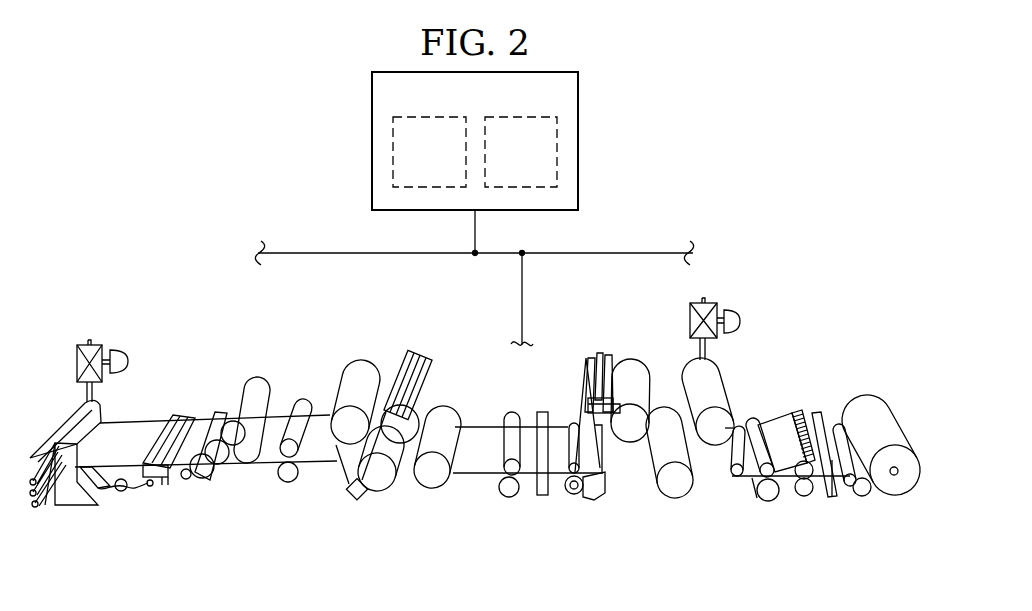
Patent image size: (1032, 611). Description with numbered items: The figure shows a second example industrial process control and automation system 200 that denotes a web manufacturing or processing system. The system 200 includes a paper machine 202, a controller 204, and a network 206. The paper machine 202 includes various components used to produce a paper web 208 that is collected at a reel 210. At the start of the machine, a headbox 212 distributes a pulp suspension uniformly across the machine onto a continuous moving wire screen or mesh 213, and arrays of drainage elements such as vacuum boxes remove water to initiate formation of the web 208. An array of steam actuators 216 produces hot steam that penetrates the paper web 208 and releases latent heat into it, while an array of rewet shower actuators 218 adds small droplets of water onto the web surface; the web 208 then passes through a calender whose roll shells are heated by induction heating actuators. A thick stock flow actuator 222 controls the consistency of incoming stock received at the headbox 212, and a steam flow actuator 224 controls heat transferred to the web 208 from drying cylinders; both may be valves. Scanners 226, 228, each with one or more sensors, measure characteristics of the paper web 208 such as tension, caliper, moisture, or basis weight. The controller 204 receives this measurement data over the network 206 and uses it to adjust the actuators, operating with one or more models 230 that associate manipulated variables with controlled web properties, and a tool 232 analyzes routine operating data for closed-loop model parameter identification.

The industrial process control and automation system 200 is at (312, 110).
The paper machine 202 is at (247, 330).
The controller 204 is at (581, 142).
The network 206 is at (339, 252).
The paper web 208 is at (263, 465).
The reel 210 is at (895, 496).
The headbox 212 is at (42, 442).
The wire screen or mesh 213 is at (133, 491).
The steam actuators 216 is at (362, 495).
The rewet shower actuators 218 is at (598, 350).
The thick stock flow actuator 222 is at (126, 362).
The steam flow actuator 224 is at (741, 322).
The scanner 226 is at (545, 497).
The scanner 228 is at (813, 412).
The model 230 is at (450, 166).
The tool 232 is at (541, 166).